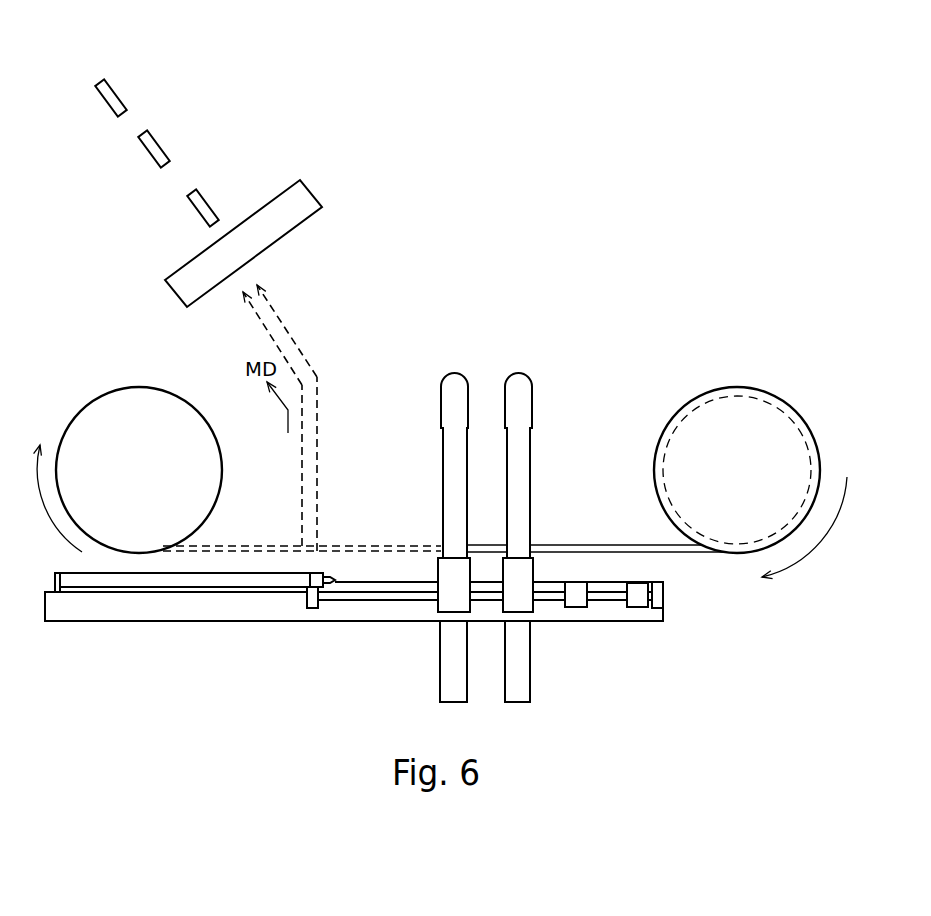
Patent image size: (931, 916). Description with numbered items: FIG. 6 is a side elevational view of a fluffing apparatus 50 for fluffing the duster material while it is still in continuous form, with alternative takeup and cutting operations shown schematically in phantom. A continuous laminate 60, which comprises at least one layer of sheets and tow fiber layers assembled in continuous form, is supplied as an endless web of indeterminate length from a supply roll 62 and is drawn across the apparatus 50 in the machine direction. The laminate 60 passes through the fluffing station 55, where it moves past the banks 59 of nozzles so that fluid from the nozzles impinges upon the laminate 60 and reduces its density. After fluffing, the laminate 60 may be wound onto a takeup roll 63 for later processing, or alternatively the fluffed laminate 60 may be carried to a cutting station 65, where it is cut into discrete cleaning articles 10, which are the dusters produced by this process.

The cleaning article 10 is at (110, 88).
The cutting station 65 is at (298, 192).
The takeup roll 63 is at (128, 470).
The supply roll 62 is at (746, 487).
The laminate 60 is at (237, 547).
The fluffing apparatus 50 is at (192, 655).
The fluffing station 55 is at (529, 514).
The bank of nozzles 59 is at (522, 443).